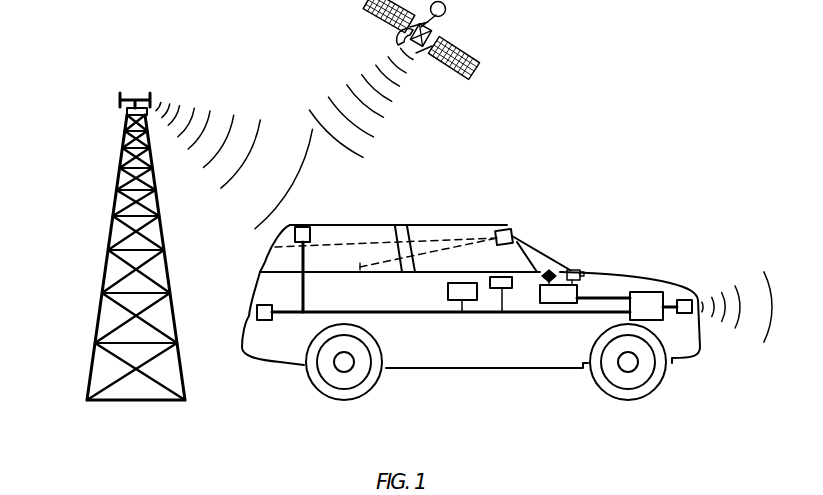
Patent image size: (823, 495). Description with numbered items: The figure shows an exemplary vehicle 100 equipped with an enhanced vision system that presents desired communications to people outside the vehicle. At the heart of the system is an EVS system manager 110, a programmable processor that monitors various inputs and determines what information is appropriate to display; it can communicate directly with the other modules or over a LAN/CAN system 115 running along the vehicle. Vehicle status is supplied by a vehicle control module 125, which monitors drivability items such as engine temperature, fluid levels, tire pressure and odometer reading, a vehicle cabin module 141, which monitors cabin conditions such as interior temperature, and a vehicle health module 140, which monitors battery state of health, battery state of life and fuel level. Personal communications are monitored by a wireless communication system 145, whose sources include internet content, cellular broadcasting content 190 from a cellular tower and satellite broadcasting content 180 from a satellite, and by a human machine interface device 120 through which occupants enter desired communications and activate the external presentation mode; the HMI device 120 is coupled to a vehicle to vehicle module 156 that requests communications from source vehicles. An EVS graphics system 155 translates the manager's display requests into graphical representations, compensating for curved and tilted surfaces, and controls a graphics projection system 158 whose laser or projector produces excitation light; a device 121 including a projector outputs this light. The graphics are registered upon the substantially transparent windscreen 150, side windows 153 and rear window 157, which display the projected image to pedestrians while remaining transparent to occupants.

The vehicle 100 is at (402, 226).
The EVS system manager 110 is at (658, 316).
The LAN/CAN system 115 is at (522, 316).
The human machine interface (HMI) device 120 is at (494, 289).
The device including a projector 121 is at (509, 228).
The vehicle control module 125 is at (694, 303).
The vehicle health module 140 is at (257, 310).
The vehicle cabin module 141 is at (447, 301).
The wireless communication system 145 is at (290, 229).
The windscreen 150 is at (541, 268).
The side windows 153 is at (362, 232).
The EVS graphics system 155 is at (558, 302).
The vehicle to vehicle module 156 is at (584, 277).
The rear window 157 is at (261, 265).
The graphics projection system 158 is at (578, 270).
The satellite broadcasting content 180 is at (396, 41).
The cellular broadcasting content 190 is at (114, 215).